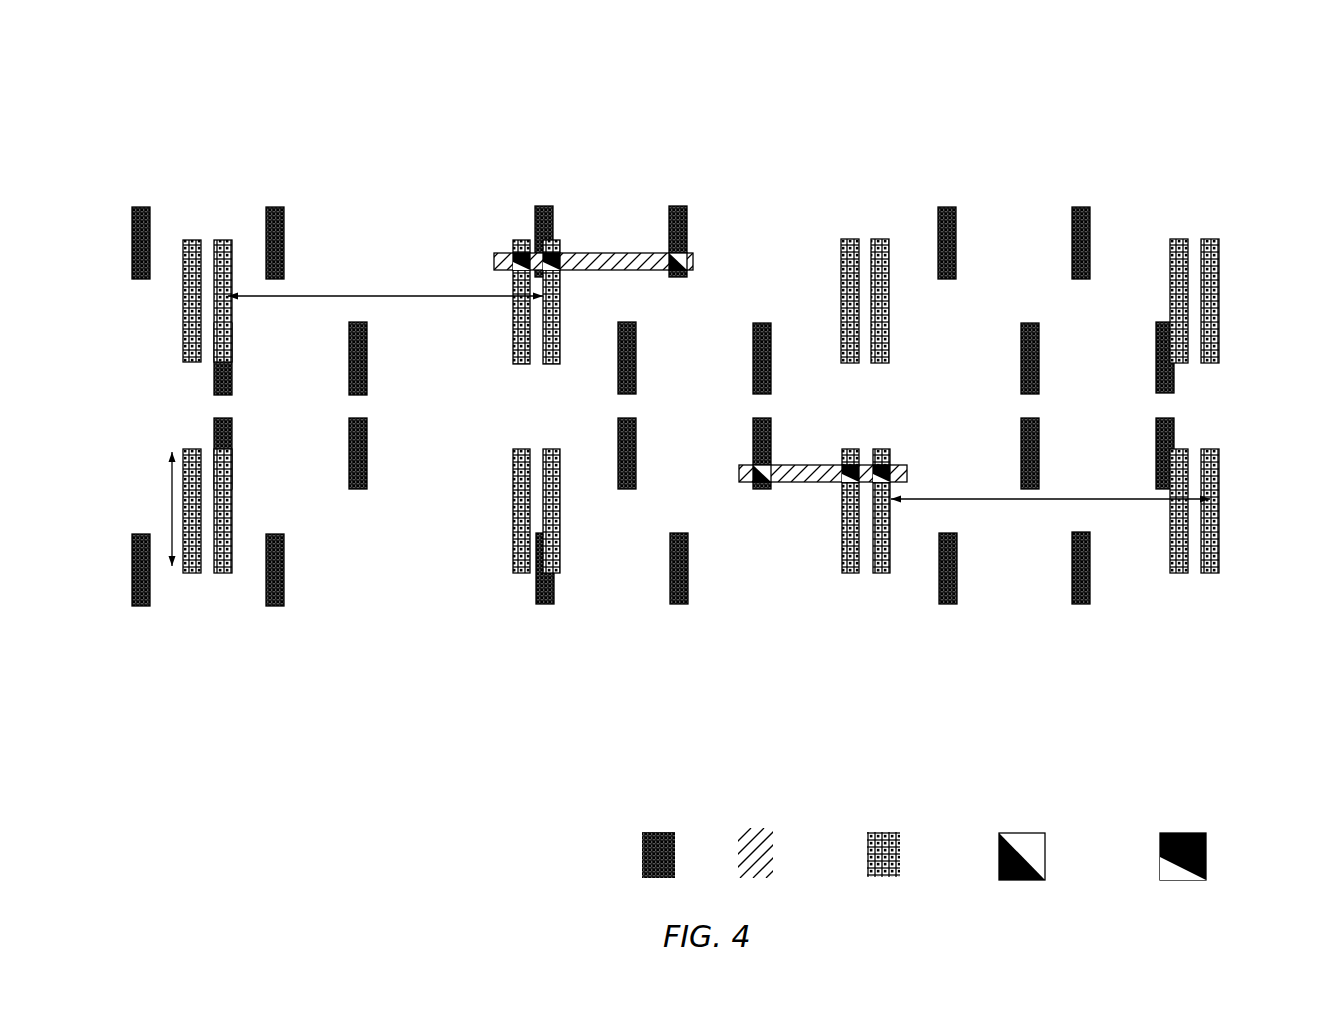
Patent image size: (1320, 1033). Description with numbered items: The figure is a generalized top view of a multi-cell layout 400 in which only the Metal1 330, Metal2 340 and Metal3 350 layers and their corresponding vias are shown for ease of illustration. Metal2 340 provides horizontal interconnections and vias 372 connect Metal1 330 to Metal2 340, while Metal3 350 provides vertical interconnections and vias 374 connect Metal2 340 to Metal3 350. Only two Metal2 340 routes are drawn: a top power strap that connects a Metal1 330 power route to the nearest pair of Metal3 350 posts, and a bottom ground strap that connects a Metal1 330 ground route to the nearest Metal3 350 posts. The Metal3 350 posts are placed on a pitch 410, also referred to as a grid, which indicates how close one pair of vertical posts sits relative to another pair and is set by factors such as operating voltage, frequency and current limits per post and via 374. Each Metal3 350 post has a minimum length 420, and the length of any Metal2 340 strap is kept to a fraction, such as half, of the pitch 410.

The Metal1 330 is at (658, 828).
The Metal2 340 is at (757, 828).
The Metal3 350 is at (885, 828).
The via 372 is at (1022, 832).
The via 374 is at (1183, 832).
The multi-cell layout 400 is at (1228, 133).
The pitch 410 is at (1035, 655).
The length 420 is at (172, 513).